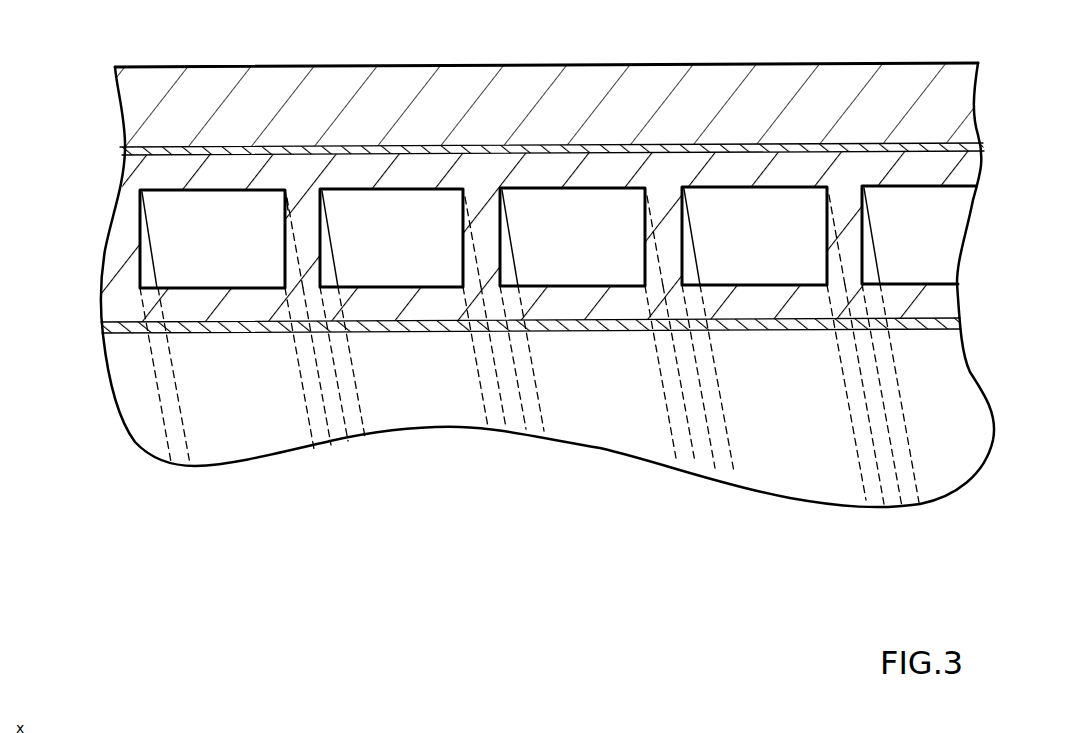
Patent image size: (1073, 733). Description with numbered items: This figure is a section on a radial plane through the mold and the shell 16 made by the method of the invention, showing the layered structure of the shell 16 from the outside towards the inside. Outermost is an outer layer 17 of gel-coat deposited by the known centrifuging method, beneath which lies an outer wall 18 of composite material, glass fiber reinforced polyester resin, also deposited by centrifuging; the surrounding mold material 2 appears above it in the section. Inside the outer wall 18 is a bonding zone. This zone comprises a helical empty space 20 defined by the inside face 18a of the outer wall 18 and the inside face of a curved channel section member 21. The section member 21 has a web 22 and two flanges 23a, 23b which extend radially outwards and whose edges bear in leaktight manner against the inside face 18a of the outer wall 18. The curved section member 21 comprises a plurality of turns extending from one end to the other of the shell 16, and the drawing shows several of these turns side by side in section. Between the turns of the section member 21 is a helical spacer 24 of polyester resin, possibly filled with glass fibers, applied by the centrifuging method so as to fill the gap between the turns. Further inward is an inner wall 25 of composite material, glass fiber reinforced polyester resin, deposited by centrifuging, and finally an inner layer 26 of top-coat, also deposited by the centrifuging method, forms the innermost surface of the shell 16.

The substrate layer 2 is at (583, 83).
The shell 16 is at (1000, 325).
The outer layer 17 is at (962, 150).
The outer wall 18 is at (960, 166).
The inside face 18a is at (575, 192).
The helical empty space 20 is at (207, 205).
The curved channel section member 21 is at (205, 300).
The web 22 is at (224, 287).
The flange 23a is at (150, 232).
The flange 23b is at (285, 232).
The helical spacer 24 is at (306, 233).
The inner wall 25 is at (928, 297).
The inner layer 26 is at (757, 330).